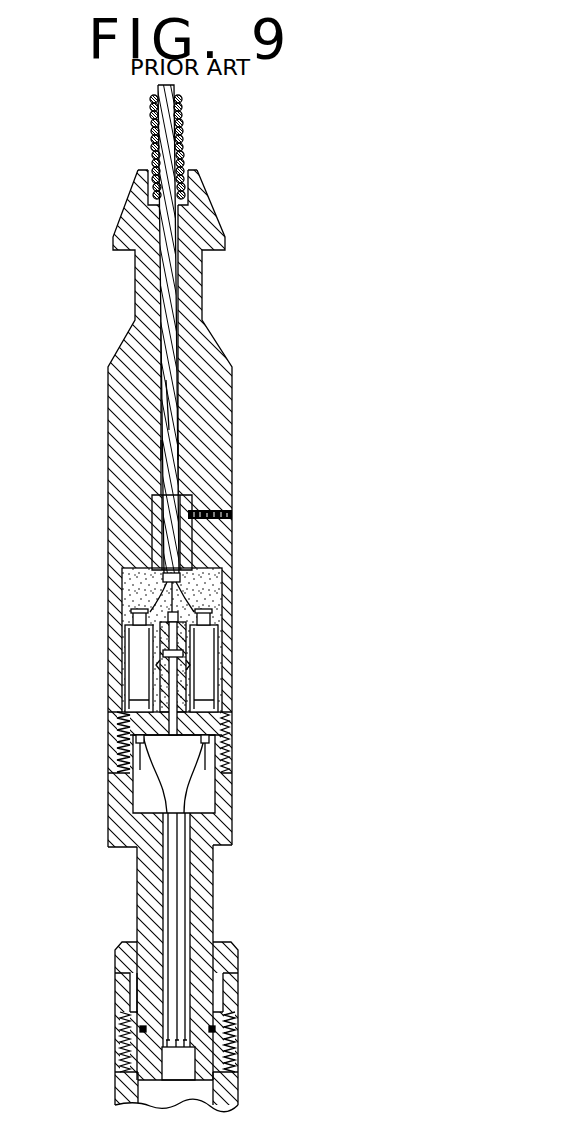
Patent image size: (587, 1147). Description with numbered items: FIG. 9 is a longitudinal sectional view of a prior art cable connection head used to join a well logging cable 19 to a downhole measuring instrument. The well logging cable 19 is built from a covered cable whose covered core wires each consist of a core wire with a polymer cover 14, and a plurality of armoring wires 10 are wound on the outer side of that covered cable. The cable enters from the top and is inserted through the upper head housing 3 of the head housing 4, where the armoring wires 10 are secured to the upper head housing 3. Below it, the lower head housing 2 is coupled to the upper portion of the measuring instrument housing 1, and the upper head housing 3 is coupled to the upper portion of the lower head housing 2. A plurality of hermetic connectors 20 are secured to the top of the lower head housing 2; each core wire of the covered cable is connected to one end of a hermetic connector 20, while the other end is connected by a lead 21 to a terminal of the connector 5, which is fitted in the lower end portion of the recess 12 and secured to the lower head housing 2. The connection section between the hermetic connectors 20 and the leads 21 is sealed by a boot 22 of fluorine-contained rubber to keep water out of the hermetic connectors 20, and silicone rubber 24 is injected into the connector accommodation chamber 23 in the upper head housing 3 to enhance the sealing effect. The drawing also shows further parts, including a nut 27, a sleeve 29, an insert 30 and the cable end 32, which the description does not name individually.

The measuring instrument housing 1 is at (118, 1093).
The lower head housing 2 is at (108, 826).
The upper head housing 3 is at (108, 437).
The head housing 4 is at (108, 773).
The connector 5 is at (188, 1060).
The armoring wires 10 is at (178, 446).
The recess 12 is at (152, 914).
The polymer cover 14 is at (150, 597).
The well logging cable 19 is at (180, 408).
The hermetic connectors 20 is at (188, 646).
The lead 21 is at (138, 787).
The boot 22 is at (128, 672).
The connector accommodation chamber 23 is at (210, 598).
The silicone rubber 24 is at (183, 575).
The nut 27 is at (236, 944).
The threaded sleeve 29 is at (202, 508).
The insert 30 is at (152, 506).
The cable 32 is at (152, 145).